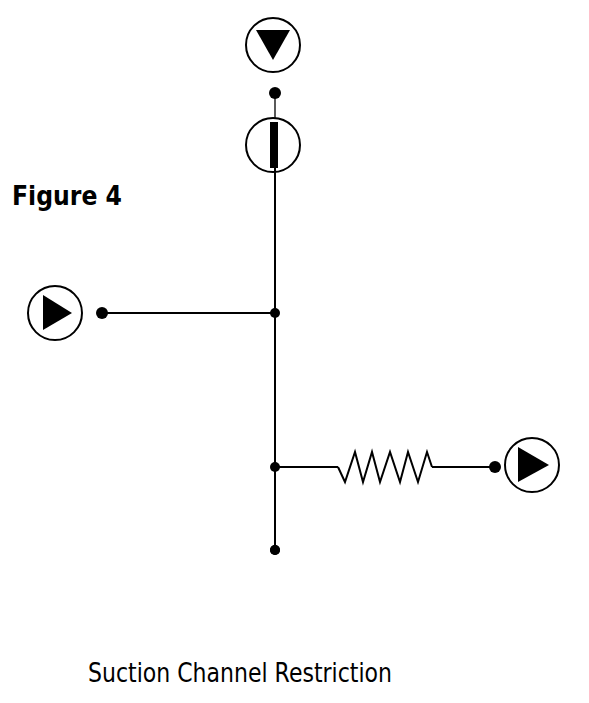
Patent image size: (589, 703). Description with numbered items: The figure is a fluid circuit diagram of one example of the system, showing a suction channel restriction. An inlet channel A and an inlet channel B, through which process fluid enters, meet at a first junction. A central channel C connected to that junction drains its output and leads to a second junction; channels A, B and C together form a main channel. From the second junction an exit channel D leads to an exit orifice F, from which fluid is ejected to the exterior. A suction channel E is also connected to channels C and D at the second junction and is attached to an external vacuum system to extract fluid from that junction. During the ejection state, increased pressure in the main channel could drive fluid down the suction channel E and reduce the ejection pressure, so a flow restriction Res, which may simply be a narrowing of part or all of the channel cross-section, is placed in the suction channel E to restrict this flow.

The inlet channel A is at (253, 240).
The inlet channel B is at (188, 339).
The central channel C is at (253, 390).
The exit channel D is at (254, 508).
The suction channel E is at (385, 432).
The exit orifice F is at (255, 564).
The flow restriction Res is at (406, 501).